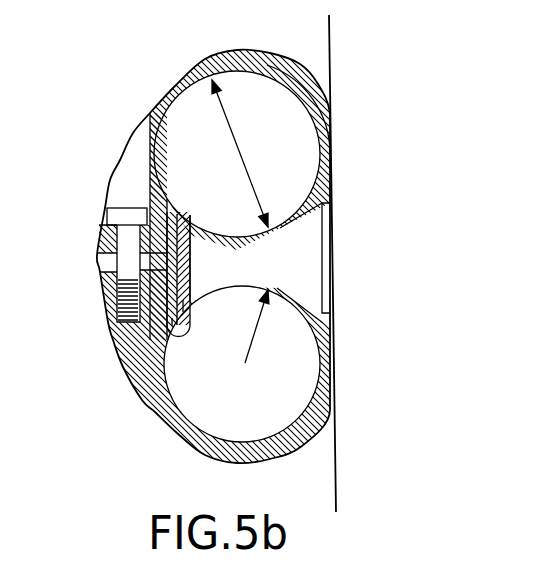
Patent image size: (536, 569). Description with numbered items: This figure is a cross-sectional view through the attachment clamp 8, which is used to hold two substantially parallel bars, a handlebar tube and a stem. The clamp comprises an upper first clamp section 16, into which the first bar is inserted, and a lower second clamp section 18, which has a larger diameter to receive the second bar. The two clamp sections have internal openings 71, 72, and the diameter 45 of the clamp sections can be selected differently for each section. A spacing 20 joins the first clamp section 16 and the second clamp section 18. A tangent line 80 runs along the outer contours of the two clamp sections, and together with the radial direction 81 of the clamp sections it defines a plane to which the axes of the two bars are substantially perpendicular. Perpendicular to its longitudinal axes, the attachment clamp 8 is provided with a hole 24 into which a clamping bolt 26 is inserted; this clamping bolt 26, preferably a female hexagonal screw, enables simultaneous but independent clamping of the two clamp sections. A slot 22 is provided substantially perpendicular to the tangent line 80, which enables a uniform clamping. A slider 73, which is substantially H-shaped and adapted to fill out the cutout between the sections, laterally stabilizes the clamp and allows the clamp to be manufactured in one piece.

The attachment clamp 8 is at (368, 73).
The first clamp section 16 is at (262, 87).
The second clamp section 18 is at (268, 433).
The spacing 20 is at (310, 263).
The slot 22 is at (103, 257).
The hole 24 is at (122, 305).
The clamping bolt 26 is at (127, 207).
The diameter 45 is at (242, 127).
The opening 71 is at (172, 210).
The opening 72 is at (177, 325).
The slider 73 is at (183, 307).
The tangent line 80 is at (335, 470).
The radial direction 81 is at (258, 350).